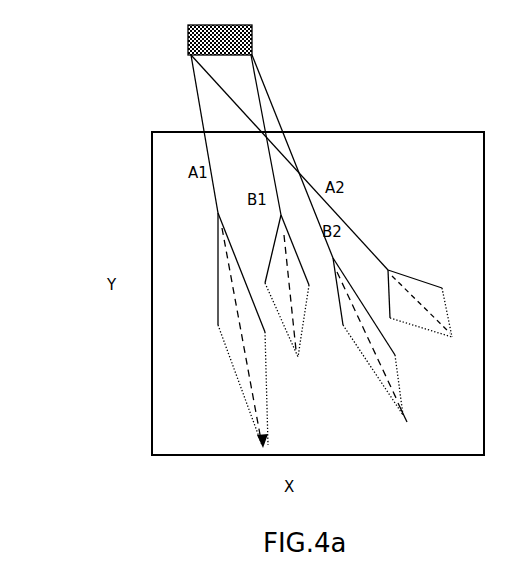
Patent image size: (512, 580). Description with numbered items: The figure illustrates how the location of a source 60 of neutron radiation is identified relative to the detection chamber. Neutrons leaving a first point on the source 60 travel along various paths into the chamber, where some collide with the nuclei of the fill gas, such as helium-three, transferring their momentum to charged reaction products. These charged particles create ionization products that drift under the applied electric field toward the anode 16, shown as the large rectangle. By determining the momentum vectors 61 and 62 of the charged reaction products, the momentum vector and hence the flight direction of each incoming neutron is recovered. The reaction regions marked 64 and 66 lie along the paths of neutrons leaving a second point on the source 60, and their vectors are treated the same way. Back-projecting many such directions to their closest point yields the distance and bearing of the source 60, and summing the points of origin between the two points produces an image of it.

The anode 16 is at (146, 175).
The source of neutron radiation 60 is at (188, 37).
The momentum vector 61 is at (164, 251).
The momentum vector 62 is at (422, 303).
The beam spot 64 is at (292, 320).
The beam spot 66 is at (372, 339).